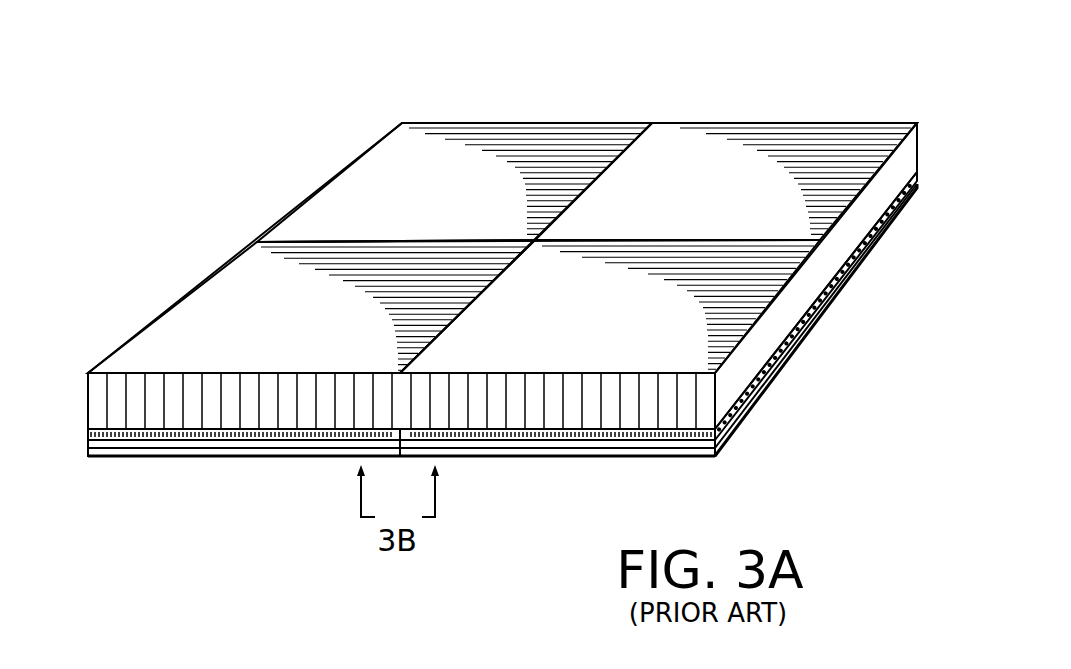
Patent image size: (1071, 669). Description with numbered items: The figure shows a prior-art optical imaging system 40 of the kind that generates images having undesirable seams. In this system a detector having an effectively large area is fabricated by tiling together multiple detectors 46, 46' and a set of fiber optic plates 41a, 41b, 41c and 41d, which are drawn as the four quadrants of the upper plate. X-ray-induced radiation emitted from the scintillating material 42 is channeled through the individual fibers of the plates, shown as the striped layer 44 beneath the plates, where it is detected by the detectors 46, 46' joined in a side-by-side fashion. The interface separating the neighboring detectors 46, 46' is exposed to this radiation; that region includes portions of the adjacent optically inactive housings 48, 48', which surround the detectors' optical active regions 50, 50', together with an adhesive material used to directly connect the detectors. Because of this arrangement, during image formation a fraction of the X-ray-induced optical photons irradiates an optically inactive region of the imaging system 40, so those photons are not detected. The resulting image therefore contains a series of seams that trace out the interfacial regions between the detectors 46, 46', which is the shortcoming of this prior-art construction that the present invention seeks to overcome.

The optical imaging system 40 is at (474, 279).
The fiber optic plate 41a is at (422, 199).
The fiber optic plate 41b is at (750, 199).
The fiber optic plate 41c is at (660, 320).
The fiber optic plate 41d is at (280, 318).
The scintillating material 42 is at (197, 312).
The cell layer / substrate 44 is at (572, 380).
The detector 46 is at (244, 493).
The detector 46' is at (557, 491).
The optically inactive housing 48 is at (375, 485).
The optically inactive housing 48' is at (816, 343).
The optical active region 50 is at (373, 410).
The optical active region 50' is at (816, 306).